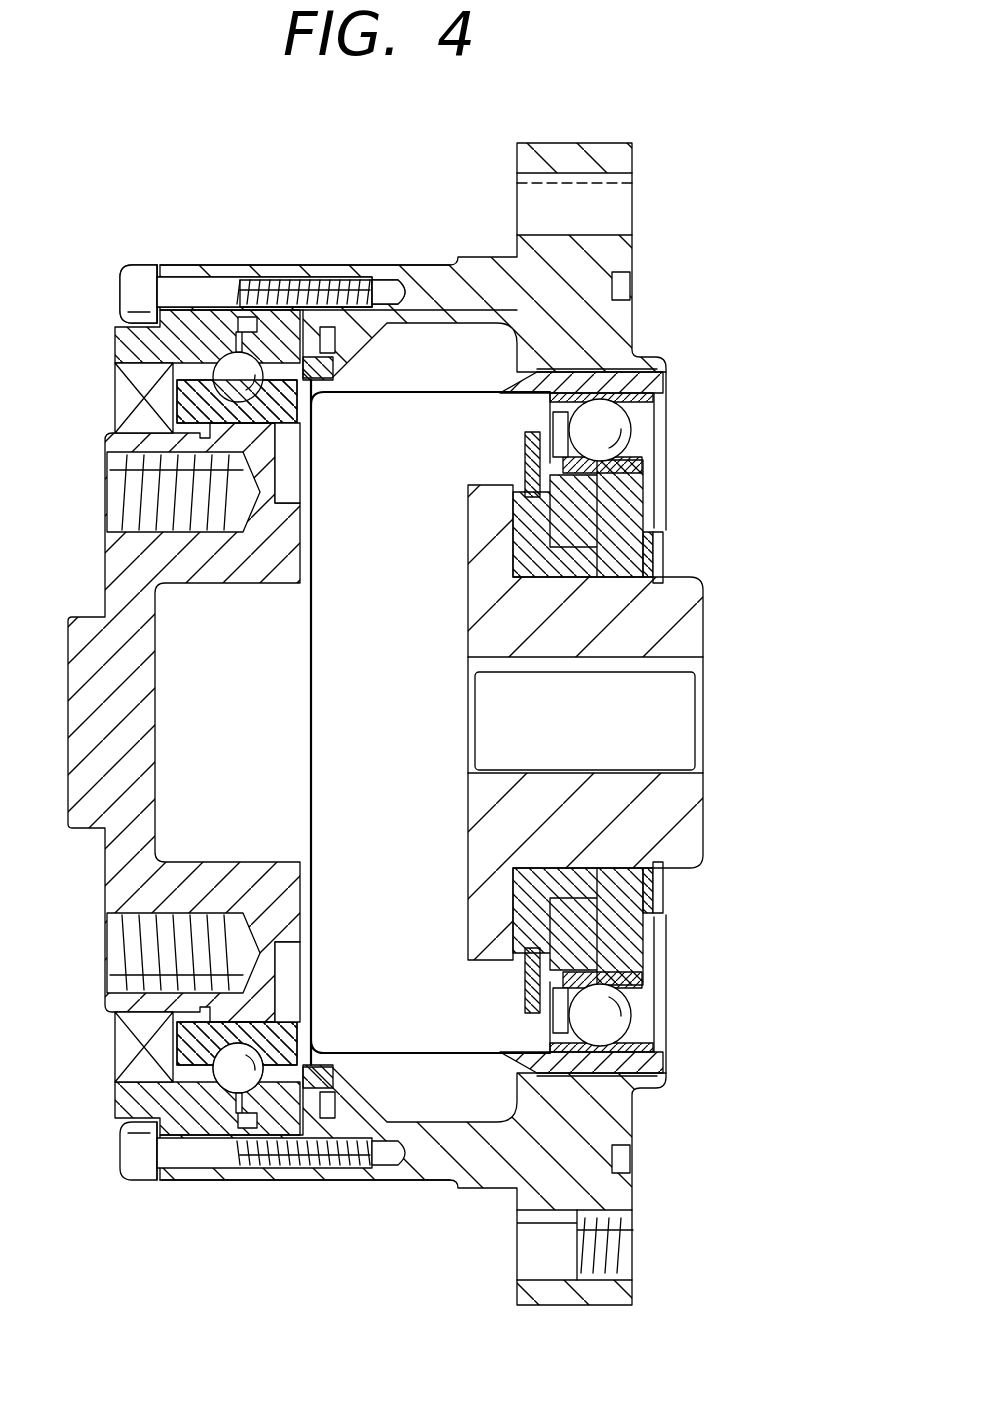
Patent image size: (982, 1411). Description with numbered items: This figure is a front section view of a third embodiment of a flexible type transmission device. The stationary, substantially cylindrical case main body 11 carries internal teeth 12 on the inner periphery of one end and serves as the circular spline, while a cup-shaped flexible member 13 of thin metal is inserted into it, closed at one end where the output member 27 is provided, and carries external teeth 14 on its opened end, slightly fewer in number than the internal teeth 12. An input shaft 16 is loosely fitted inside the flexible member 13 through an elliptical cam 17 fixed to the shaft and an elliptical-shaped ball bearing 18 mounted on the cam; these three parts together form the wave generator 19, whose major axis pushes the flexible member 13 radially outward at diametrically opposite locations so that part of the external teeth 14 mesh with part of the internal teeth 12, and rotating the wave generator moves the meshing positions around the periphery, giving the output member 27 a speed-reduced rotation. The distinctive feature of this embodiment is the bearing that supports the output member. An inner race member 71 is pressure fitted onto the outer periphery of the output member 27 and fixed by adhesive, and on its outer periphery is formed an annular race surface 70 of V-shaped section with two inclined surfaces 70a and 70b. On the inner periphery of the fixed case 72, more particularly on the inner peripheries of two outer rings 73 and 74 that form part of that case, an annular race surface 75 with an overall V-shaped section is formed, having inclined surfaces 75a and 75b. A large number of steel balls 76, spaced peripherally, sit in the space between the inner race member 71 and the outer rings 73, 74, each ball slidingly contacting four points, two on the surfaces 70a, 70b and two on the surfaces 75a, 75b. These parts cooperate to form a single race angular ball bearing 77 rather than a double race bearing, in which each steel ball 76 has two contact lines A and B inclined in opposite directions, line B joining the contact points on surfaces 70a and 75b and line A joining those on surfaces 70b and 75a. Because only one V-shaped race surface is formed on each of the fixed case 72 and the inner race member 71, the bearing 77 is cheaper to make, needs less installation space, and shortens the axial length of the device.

The case main body 11 is at (622, 250).
The internal teeth 12 is at (625, 378).
The flexible member 13 is at (453, 395).
The external teeth 14 is at (598, 362).
The input shaft 16 is at (683, 628).
The elliptical cam 17 is at (625, 493).
The elliptical-shaped ball bearing 18 is at (613, 424).
The wave generator 19 is at (676, 557).
The output member 27 is at (283, 543).
The annular race surface 70 is at (300, 1045).
The inclined surface 70a is at (240, 360).
The inclined surface 70b is at (300, 403).
The inner race member 71 is at (190, 386).
The fixed case 72 is at (338, 262).
The outer ring 73 is at (200, 265).
The outer ring 74 is at (285, 265).
The annular race surface 75 is at (335, 368).
The inclined surface 75a is at (225, 1090).
The inclined surface 75b is at (318, 1100).
The steel balls 76 is at (175, 1058).
The single race angular ball bearing 77 is at (205, 1060).
The contact angle line A is at (160, 298).
The contact angle line B is at (345, 270).